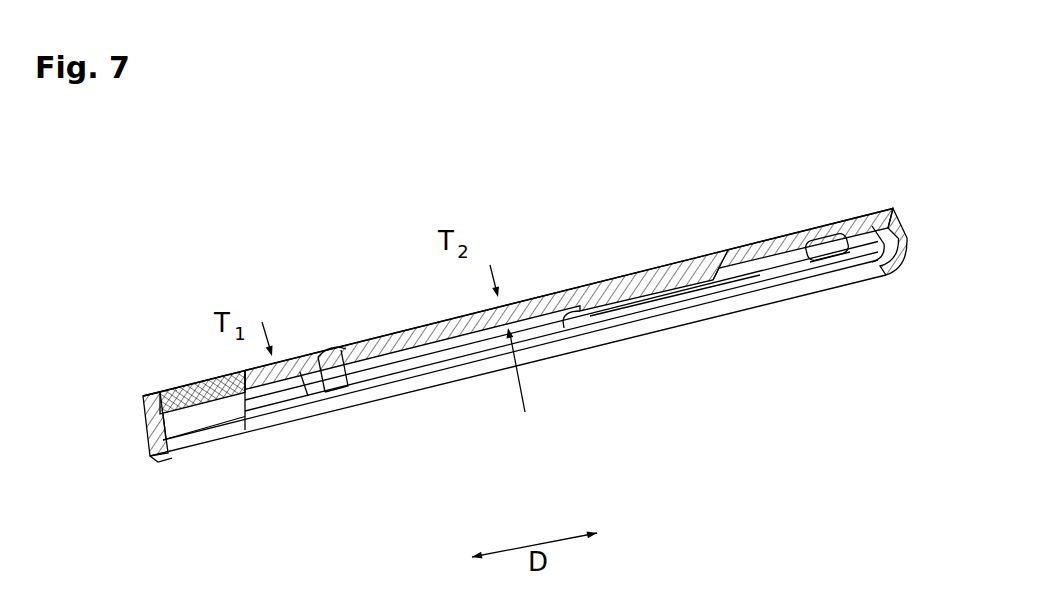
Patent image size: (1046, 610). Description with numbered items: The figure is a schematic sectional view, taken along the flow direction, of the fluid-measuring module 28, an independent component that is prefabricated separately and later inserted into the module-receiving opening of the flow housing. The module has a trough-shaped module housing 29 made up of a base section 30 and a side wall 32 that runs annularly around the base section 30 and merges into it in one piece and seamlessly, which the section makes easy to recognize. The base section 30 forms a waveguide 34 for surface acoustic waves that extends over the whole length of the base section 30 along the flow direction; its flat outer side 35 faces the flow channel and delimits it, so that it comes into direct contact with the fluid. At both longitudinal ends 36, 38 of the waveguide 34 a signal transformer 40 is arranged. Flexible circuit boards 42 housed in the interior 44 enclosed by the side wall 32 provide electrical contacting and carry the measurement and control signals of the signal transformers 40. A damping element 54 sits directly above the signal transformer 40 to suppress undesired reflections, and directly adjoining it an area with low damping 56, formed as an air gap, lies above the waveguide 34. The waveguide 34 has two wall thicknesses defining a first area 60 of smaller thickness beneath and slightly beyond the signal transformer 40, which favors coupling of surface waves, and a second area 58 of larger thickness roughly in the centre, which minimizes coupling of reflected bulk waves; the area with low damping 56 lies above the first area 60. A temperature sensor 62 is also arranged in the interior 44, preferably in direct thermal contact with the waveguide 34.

The fluid-measuring module 28 is at (157, 183).
The module housing 29 is at (175, 472).
The base section 30 is at (227, 370).
The side wall 32 is at (140, 423).
The waveguide 34 is at (742, 247).
The outer side of the waveguide 35 is at (622, 273).
The longitudinal end of the waveguide 36 is at (123, 358).
The longitudinal end of the waveguide 38 is at (909, 213).
The signal transformer 40 is at (245, 392).
The flexible circuit board 42 is at (443, 357).
The interior of the module housing 44 is at (654, 328).
The damping element 54 is at (173, 390).
The area with low damping 56 is at (298, 366).
The second area 58 is at (398, 340).
The first area 60 is at (315, 348).
The temperature sensor 62 is at (823, 262).